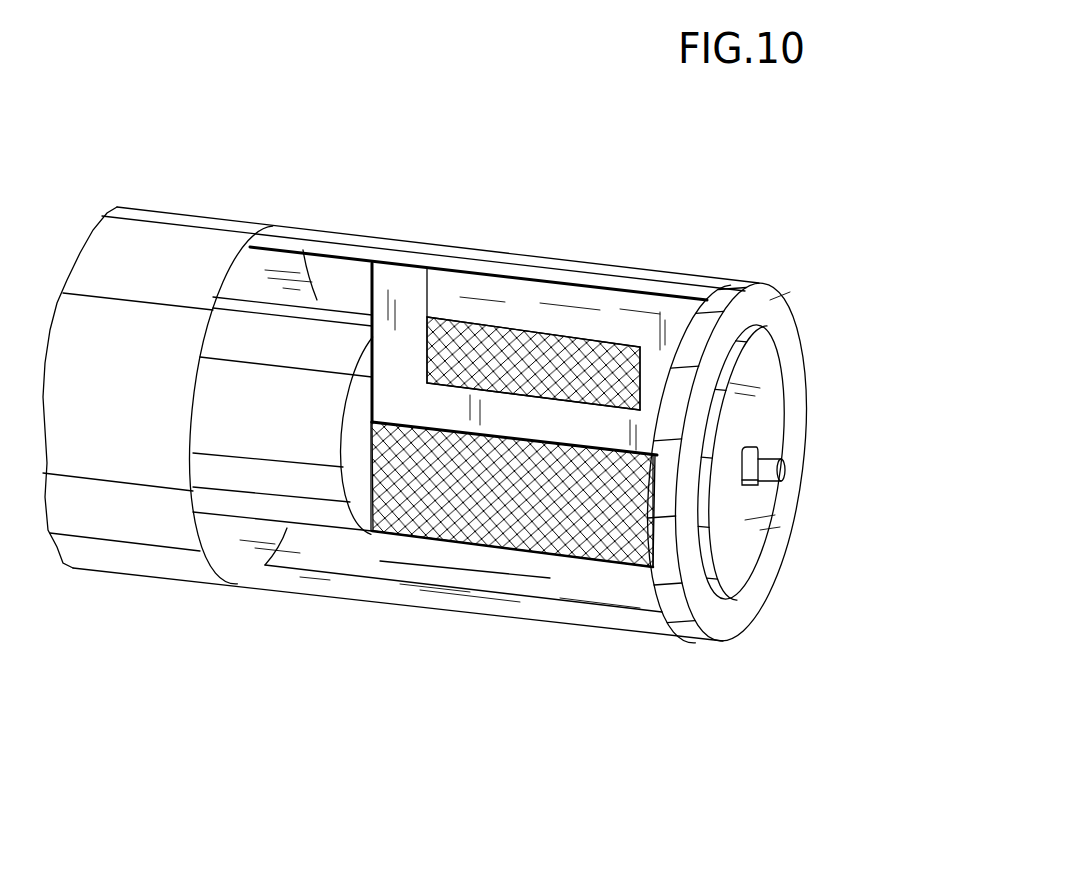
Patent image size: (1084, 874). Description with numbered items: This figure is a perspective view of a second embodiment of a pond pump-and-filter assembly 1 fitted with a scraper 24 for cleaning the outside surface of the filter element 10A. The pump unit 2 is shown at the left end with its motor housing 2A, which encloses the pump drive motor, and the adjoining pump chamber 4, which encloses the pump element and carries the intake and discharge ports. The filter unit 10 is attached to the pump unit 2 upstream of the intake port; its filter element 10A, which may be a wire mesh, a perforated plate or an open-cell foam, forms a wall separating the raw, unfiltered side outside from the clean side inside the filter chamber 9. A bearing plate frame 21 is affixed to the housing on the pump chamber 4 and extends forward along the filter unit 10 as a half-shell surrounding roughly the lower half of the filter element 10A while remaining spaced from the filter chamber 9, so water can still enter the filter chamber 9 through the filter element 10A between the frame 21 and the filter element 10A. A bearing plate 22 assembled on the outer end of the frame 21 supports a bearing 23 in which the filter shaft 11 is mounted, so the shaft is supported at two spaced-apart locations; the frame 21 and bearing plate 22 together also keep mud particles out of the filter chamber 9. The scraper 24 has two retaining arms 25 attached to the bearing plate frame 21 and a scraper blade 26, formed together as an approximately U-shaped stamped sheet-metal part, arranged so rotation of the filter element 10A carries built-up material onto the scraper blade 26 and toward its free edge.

The pump-and-filter assembly 1 is at (233, 176).
The pump unit 2 is at (129, 624).
The motor housing 2A is at (100, 543).
The pump chamber 4 is at (243, 277).
The filter chamber 9 is at (452, 520).
The filter unit 10 is at (485, 204).
The filter element 10A is at (617, 520).
The filter shaft 11 is at (783, 485).
The bearing plate frame 21 is at (488, 600).
The bearing plate 22 is at (772, 368).
The bearing 23 is at (734, 504).
The scraper 24 is at (544, 457).
The retaining arms 25 is at (410, 278).
The scraper blade 26 is at (413, 407).